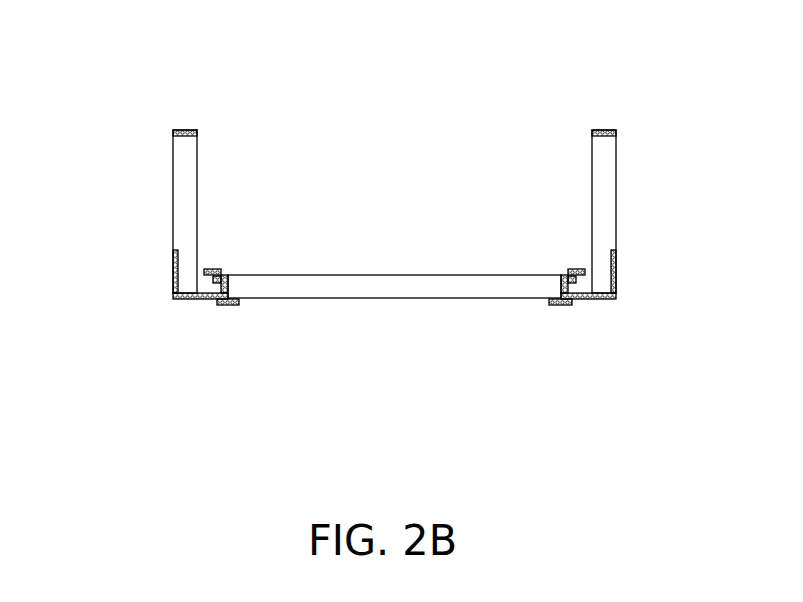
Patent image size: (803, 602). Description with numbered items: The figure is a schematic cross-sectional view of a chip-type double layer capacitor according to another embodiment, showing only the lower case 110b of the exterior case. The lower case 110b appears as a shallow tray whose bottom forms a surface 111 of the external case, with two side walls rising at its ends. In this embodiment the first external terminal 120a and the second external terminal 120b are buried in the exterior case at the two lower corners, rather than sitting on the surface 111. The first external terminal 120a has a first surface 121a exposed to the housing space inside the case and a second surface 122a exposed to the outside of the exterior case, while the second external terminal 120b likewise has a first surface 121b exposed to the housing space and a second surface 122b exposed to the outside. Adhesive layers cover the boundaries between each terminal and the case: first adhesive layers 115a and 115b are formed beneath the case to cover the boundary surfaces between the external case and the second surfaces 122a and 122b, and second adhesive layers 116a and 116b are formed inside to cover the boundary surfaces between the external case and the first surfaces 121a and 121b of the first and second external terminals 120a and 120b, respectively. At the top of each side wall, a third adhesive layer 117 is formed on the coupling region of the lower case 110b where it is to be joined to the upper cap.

The third adhesive layer 117 is at (186, 130).
The lower case 110b is at (611, 181).
The surface of the external case 111 is at (405, 298).
The first adhesive layer 115a is at (228, 306).
The first adhesive layer 115b is at (560, 306).
The second adhesive layer 116a is at (212, 269).
The second adhesive layer 116b is at (577, 269).
The first external terminal 120a is at (173, 264).
The second external terminal 120b is at (617, 270).
The first surface 121a is at (230, 275).
The first surface 121b is at (562, 275).
The second surface 122a is at (190, 302).
The second surface 122b is at (593, 300).